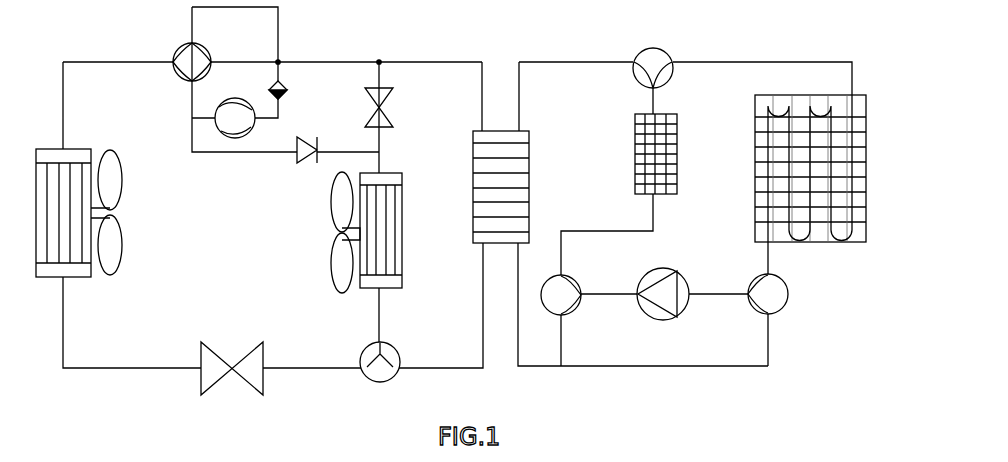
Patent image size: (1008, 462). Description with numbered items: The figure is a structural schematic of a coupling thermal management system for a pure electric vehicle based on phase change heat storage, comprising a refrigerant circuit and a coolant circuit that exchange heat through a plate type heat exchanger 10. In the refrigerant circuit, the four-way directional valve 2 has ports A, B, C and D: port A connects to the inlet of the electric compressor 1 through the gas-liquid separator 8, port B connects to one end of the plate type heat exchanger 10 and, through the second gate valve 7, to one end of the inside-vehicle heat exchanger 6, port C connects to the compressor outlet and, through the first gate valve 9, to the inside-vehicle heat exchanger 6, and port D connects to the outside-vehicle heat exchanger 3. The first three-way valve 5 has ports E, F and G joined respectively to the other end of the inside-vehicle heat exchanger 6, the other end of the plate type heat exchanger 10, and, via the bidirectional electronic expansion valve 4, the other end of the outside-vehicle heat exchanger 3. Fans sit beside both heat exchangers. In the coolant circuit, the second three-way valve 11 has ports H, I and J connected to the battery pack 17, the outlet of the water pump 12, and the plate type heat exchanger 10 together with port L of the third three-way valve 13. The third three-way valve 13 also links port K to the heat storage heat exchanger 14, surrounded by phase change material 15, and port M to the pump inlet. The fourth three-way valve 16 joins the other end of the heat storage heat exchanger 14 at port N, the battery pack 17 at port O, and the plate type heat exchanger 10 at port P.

The electric compressor 1 is at (238, 99).
The four-way directional valve 2 is at (205, 44).
The outside-vehicle heat exchanger 3 is at (80, 279).
The bidirectional electronic expansion valve 4 is at (213, 354).
The first three-way valve 5 is at (366, 346).
The inside-vehicle heat exchanger 6 is at (403, 226).
The second gate valve 7 is at (388, 118).
The gas-liquid separator 8 is at (285, 84).
The first gate valve 9 is at (307, 141).
The plate type heat exchanger 10 is at (529, 184).
The second three-way valve 11 is at (580, 282).
The water pump 12 is at (672, 272).
The third three-way valve 13 is at (787, 297).
The heat storage heat exchanger 14 is at (850, 226).
The phase change material 15 is at (868, 103).
The fourth three-way valve 16 is at (672, 82).
The battery pack 17 is at (679, 150).